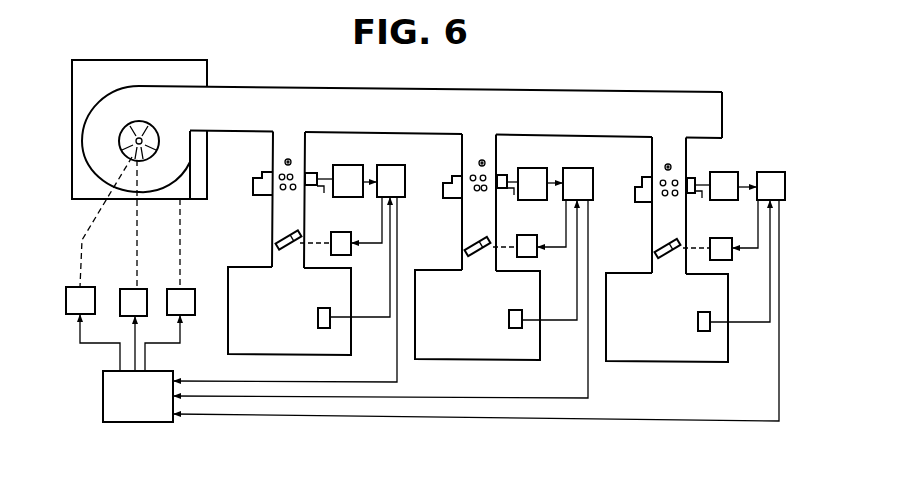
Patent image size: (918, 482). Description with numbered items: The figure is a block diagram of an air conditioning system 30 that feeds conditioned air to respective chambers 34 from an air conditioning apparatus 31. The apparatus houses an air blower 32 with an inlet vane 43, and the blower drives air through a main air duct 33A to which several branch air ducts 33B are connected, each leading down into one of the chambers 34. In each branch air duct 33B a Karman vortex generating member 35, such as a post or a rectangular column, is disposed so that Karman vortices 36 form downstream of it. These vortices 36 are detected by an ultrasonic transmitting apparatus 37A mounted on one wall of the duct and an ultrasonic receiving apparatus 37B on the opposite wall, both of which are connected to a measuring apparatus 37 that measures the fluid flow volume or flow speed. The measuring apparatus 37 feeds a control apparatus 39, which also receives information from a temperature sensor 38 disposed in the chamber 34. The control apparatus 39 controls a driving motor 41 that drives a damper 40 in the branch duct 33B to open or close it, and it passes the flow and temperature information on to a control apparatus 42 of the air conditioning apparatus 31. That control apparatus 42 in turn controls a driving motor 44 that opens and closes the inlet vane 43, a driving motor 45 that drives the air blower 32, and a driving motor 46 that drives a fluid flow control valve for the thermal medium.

The air conditioning system 30 is at (582, 86).
The air conditioning apparatus 31 is at (176, 59).
The air blower 32 is at (121, 85).
The main air duct 33A is at (476, 88).
The branch air duct 33B is at (272, 226).
The chamber 34 is at (275, 356).
The Karman vortex generating member 35 is at (292, 160).
The Karman vortex 36 is at (280, 173).
The measuring apparatus 37 is at (353, 166).
The ultrasonic transmitting apparatus 37A is at (260, 176).
The ultrasonic receiving apparatus 37B is at (324, 194).
The temperature sensor 38 is at (330, 322).
The control apparatus 39 is at (393, 165).
The damper 40 is at (276, 244).
The driving motor 41 is at (350, 252).
The control apparatus 42 is at (145, 426).
The inlet vane 43 is at (119, 142).
The driving motor 44 is at (72, 315).
The driving motor 45 is at (123, 316).
The driving motor 46 is at (173, 316).